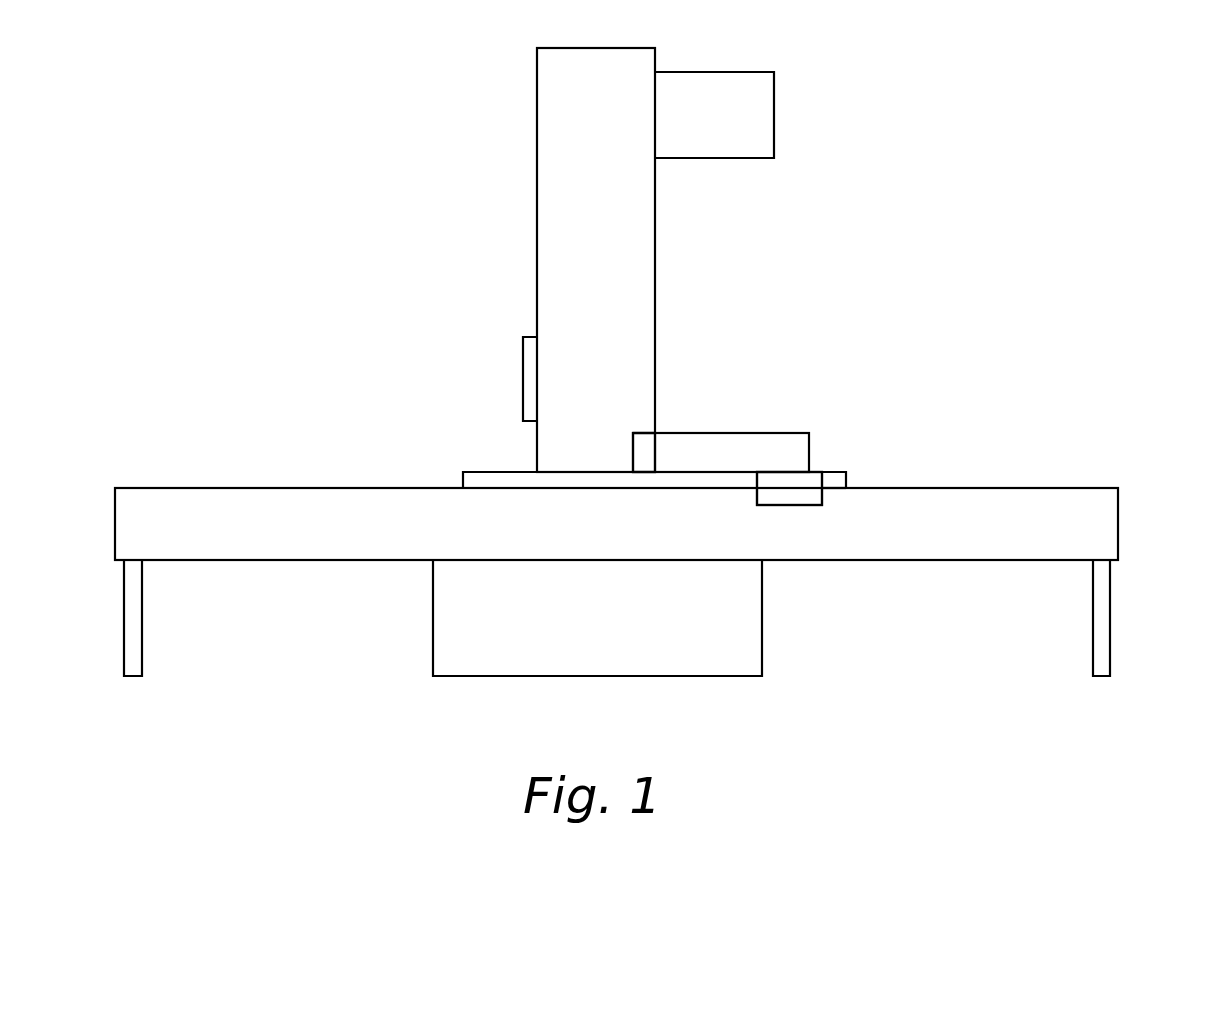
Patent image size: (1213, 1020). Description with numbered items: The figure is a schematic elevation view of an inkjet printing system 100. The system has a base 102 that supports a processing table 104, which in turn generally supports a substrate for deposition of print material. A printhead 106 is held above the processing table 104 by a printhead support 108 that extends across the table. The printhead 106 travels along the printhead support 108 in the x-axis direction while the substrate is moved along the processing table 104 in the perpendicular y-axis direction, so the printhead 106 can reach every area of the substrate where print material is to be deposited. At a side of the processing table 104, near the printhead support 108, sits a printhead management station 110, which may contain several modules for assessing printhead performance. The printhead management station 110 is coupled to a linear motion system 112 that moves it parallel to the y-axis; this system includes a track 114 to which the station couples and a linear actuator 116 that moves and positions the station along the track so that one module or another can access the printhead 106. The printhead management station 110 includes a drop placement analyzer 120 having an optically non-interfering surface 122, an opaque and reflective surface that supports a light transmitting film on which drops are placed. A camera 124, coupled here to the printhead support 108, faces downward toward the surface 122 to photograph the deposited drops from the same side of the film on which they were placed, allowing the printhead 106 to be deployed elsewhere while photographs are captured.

The inkjet printing system 100 is at (229, 88).
The base 102 is at (762, 618).
The processing table 104 is at (1118, 523).
The printhead 106 is at (775, 112).
The printhead support 108 is at (537, 112).
The printhead management station 110 is at (719, 432).
The linear motion system 112 is at (838, 430).
The track 114 is at (838, 472).
The linear actuator 116 is at (771, 506).
The drop placement analyzer 120 is at (633, 450).
The optically non-interfering surface 122 is at (634, 430).
The camera 124 is at (523, 380).